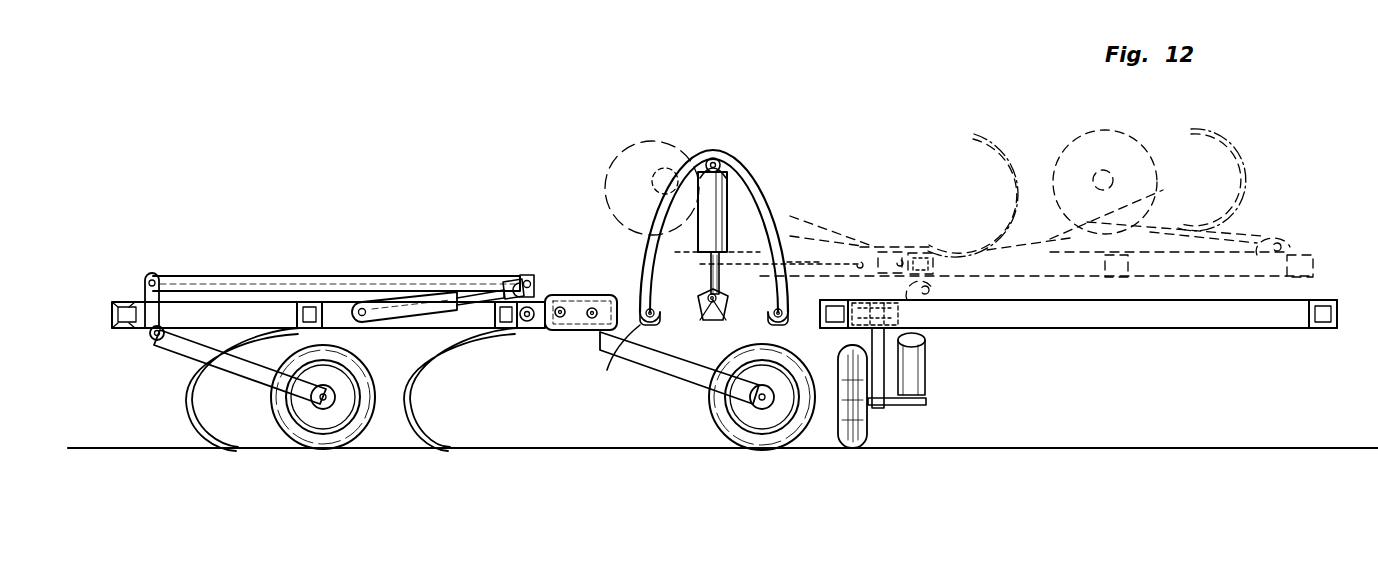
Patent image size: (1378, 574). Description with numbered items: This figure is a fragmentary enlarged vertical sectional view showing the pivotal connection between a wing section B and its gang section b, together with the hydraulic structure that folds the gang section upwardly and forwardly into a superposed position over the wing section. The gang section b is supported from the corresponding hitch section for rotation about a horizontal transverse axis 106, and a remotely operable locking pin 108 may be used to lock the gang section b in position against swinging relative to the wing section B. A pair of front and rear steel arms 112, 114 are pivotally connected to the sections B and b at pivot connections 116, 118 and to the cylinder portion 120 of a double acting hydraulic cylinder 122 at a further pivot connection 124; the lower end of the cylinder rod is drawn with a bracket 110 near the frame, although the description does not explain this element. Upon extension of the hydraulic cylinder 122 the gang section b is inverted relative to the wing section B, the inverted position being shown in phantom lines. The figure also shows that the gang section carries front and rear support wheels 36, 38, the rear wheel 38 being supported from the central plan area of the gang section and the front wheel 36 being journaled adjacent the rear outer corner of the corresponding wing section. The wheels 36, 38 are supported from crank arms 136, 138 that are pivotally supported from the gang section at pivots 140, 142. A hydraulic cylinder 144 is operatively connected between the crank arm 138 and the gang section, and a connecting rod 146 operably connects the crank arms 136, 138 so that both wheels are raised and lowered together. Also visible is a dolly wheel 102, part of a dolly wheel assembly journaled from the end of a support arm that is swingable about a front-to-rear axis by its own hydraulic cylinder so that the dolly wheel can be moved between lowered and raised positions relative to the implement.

The front support wheel 36 is at (722, 414).
The rear support wheel 38 is at (360, 386).
The dolly wheel 102 is at (853, 423).
The horizontal transverse axis 106 is at (550, 316).
The remotely operable locking pin 108 is at (557, 330).
The cylinder rod bracket 110 is at (712, 322).
The front steel arm 112 is at (746, 254).
The rear steel arm 114 is at (650, 219).
The pivot connection 116 is at (786, 322).
The pivot connection 118 is at (628, 345).
The cylinder portion 120 is at (727, 186).
The double acting hydraulic cylinder 122 is at (690, 177).
The pivot connection 124 is at (714, 158).
The crank arm 136 is at (183, 350).
The crank arm 138 is at (595, 339).
The pivot support 140 is at (150, 338).
The pivot support 142 is at (531, 302).
The hydraulic cylinder 144 is at (430, 292).
The connecting rod 146 is at (322, 274).
The gang section b is at (252, 318).
The wing section B is at (1092, 316).